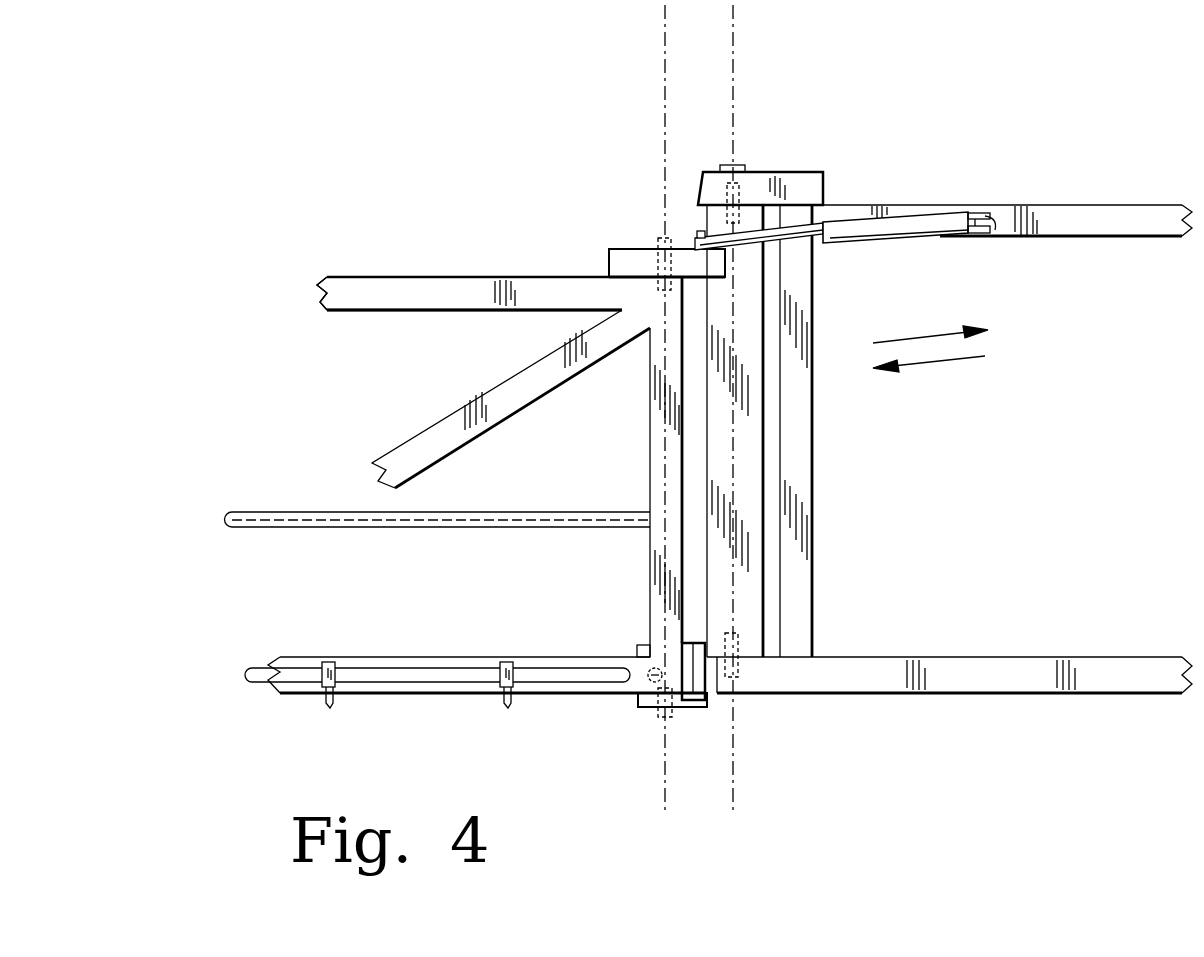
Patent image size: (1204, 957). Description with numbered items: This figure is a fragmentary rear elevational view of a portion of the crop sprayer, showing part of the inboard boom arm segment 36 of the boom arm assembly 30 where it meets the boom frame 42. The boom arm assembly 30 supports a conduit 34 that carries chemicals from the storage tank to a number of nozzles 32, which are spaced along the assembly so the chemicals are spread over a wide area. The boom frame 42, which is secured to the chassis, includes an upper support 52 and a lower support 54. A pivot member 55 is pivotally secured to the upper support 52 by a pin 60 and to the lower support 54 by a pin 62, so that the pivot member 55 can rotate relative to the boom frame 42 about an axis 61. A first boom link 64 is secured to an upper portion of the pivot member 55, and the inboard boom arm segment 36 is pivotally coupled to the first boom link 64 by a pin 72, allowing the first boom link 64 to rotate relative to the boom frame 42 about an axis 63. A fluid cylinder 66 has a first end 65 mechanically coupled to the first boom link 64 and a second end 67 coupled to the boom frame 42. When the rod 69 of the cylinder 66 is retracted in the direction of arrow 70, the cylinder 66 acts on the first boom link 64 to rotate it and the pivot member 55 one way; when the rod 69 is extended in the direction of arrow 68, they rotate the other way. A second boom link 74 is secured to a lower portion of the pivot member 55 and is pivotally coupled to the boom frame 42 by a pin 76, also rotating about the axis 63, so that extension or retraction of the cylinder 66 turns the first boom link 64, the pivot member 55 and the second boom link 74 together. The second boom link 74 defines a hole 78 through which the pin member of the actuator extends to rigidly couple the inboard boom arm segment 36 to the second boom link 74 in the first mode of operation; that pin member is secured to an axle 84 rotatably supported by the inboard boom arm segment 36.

The boom arm assembly 30 is at (375, 245).
The nozzles 32 is at (328, 706).
The conduit 34 is at (415, 685).
The inboard boom arm segment 36 is at (400, 304).
The boom frame 42 is at (1105, 205).
The upper support 52 is at (823, 186).
The lower support 54 is at (845, 690).
The pivot member 55 is at (732, 455).
The pin 60 is at (740, 192).
The axis 61 is at (735, 33).
The pin 62 is at (734, 667).
The axis 63 is at (665, 33).
The first boom link 64 is at (610, 260).
The first end 65 is at (706, 260).
The fluid cylinder 66 is at (942, 226).
The second end 67 is at (993, 233).
The arrow 68 is at (928, 362).
The rod 69 is at (838, 248).
The arrow 70 is at (933, 336).
The pin 72 is at (660, 247).
The second boom link 74 is at (690, 714).
The pin 76 is at (656, 703).
The hole 78 is at (648, 672).
The axle 84 is at (322, 516).